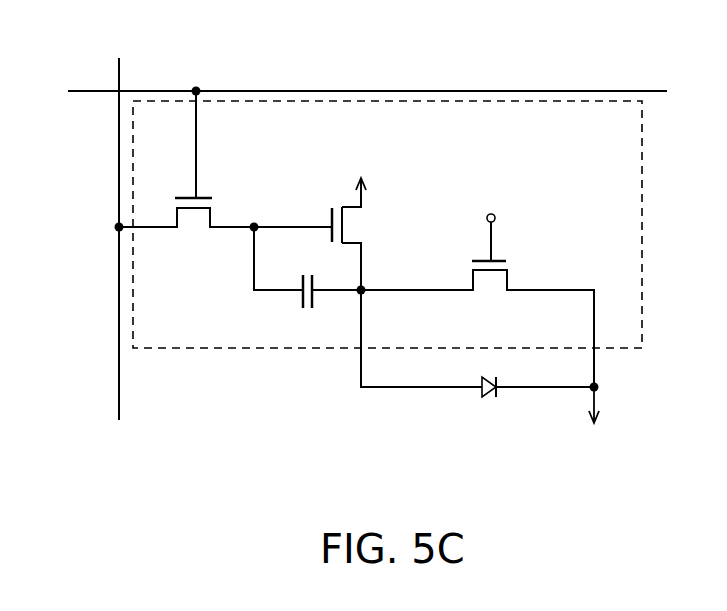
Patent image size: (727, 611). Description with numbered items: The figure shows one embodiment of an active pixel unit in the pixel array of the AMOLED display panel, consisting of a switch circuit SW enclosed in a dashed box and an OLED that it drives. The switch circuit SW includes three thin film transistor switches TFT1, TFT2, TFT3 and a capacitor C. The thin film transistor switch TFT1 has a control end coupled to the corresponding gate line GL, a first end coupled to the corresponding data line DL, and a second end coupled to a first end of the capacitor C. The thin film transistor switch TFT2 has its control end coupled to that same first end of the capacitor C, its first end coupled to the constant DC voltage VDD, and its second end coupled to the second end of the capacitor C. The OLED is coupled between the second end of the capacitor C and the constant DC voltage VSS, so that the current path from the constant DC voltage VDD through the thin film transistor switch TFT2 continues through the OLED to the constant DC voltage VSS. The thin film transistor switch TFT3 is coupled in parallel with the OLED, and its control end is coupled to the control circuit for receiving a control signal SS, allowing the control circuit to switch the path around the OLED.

The data line DL is at (116, 227).
The gate line GL is at (351, 93).
The switch circuit SW is at (642, 131).
The thin film transistor switch TFT1 is at (186, 176).
The thin film transistor switch TFT2 is at (338, 234).
The thin film transistor switch TFT3 is at (477, 304).
The capacitor C is at (307, 267).
The element OLED is at (477, 357).
The constant DC voltage VDD is at (362, 172).
The control signal SS is at (492, 205).
The constant DC voltage VSS is at (594, 421).